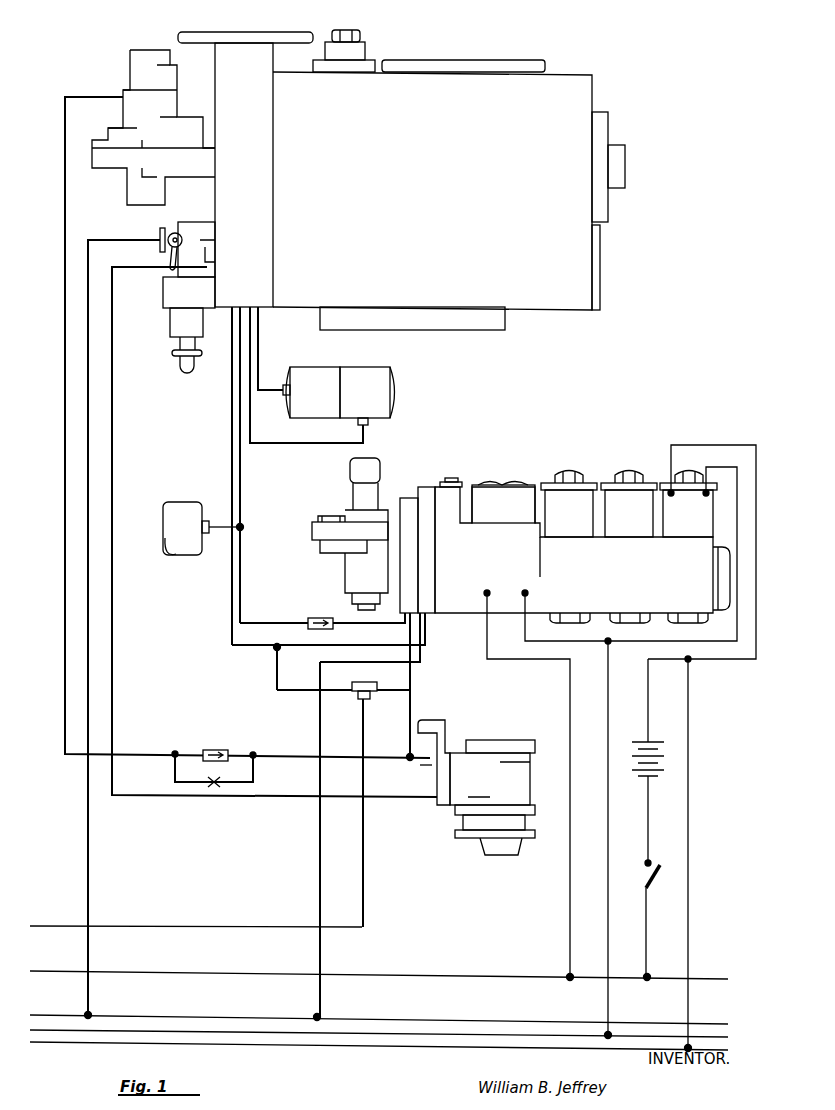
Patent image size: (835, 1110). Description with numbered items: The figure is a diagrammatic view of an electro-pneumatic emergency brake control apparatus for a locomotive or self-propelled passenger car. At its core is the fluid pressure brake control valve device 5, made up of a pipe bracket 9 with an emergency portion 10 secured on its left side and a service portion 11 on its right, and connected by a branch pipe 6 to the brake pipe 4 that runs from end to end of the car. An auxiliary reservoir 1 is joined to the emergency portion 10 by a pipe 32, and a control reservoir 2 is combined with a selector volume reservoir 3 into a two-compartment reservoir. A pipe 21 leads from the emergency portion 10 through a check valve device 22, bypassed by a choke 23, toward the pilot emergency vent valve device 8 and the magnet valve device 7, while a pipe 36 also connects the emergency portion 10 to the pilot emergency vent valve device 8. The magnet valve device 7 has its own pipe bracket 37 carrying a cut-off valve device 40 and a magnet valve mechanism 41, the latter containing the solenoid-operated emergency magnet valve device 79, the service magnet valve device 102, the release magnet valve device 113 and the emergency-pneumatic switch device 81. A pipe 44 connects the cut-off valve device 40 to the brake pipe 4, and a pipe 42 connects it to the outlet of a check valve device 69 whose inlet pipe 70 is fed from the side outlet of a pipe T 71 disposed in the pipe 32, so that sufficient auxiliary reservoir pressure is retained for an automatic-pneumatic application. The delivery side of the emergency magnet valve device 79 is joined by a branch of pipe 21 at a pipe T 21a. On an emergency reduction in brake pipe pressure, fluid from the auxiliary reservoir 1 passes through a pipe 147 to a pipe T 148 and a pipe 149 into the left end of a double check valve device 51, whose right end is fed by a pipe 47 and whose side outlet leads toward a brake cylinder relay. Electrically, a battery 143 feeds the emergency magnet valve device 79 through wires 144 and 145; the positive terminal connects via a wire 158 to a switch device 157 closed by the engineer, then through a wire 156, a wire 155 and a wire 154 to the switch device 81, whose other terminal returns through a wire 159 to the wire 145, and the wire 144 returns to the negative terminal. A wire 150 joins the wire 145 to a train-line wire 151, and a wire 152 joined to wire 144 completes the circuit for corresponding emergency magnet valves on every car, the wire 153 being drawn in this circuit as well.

The auxiliary reservoir 1 is at (170, 500).
The control reservoir 2 is at (310, 363).
The selector volume reservoir 3 is at (372, 363).
The brake pipe 4 is at (704, 1028).
The fluid pressure brake control valve device 5 is at (222, 330).
The branch pipe 6 is at (118, 240).
The magnet valve device 7 is at (413, 490).
The pilot emergency vent valve device 8 is at (494, 740).
The pipe bracket 9 is at (213, 56).
The emergency portion 10 is at (128, 56).
The service portion 11 is at (572, 70).
The pipe 21 is at (97, 97).
The pipe T 21a is at (418, 765).
The check valve device 22 is at (216, 749).
The choke 23 is at (210, 780).
The pipe 32 is at (231, 495).
The pipe 36 is at (118, 591).
The pipe bracket 37 is at (392, 495).
The cut-off valve device 40 is at (332, 558).
The magnet valve mechanism 41 is at (462, 630).
The pipe 42 is at (384, 628).
The pipe 44 is at (318, 870).
The pipe 47 is at (397, 700).
The double check valve device 51 is at (356, 708).
The check valve device 69 is at (318, 616).
The pipe 70 is at (240, 596).
The pipe T 71 is at (243, 527).
The solenoid-operated emergency magnet valve device 79 is at (686, 495).
The emergency-pneumatic switch device 81 is at (502, 482).
The solenoid-operated service magnet valve device 102 is at (626, 495).
The solenoid-operated release magnet valve device 113 is at (566, 495).
The battery 143 is at (658, 748).
The wire 144 is at (648, 682).
The wire 145 is at (718, 467).
The pipe 147 is at (232, 648).
The pipe T 148 is at (277, 644).
The pipe 149 is at (288, 690).
The wire 150 is at (606, 1000).
The wire 151 is at (66, 1016).
The wire 152 is at (416, 1046).
The conductor 153 is at (690, 870).
The wire 154 is at (570, 700).
The wire 155 is at (70, 972).
The wire 156 is at (647, 940).
The switch device 157 is at (647, 865).
The wire 158 is at (648, 810).
The wire 159 is at (568, 641).